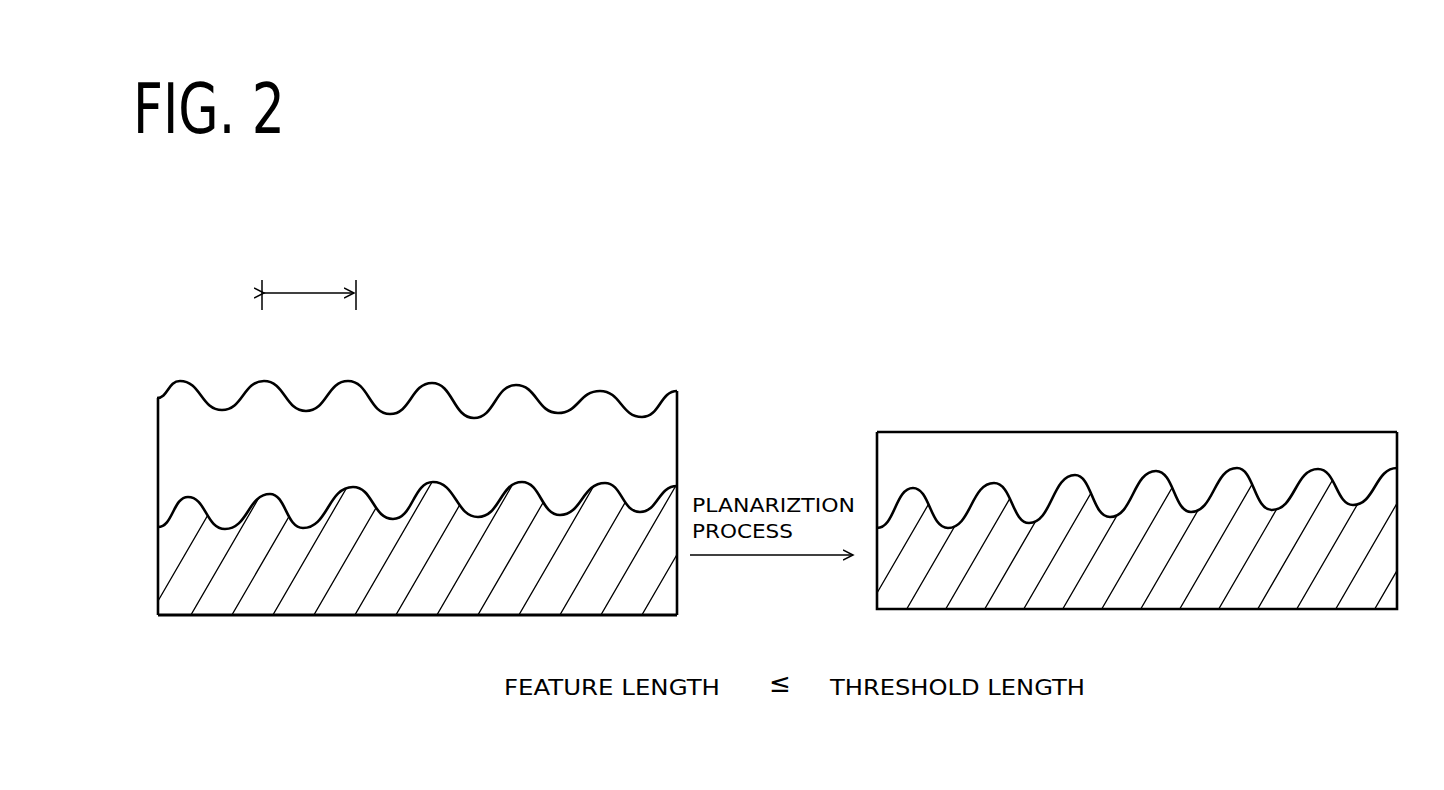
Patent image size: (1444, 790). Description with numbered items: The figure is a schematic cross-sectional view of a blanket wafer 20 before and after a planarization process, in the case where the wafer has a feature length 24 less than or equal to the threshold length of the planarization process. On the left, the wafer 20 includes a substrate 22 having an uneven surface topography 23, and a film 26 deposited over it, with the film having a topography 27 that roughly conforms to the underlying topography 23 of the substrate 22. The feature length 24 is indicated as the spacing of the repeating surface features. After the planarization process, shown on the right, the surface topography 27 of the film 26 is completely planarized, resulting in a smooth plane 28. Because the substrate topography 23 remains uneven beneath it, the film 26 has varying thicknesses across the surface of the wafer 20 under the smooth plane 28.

The wafer 20 is at (139, 340).
The substrate 22 is at (172, 553).
The topography 23 is at (279, 497).
The feature length 24 is at (298, 293).
The film 26 is at (177, 448).
The topography 27 is at (278, 388).
The smooth plane 28 is at (989, 432).